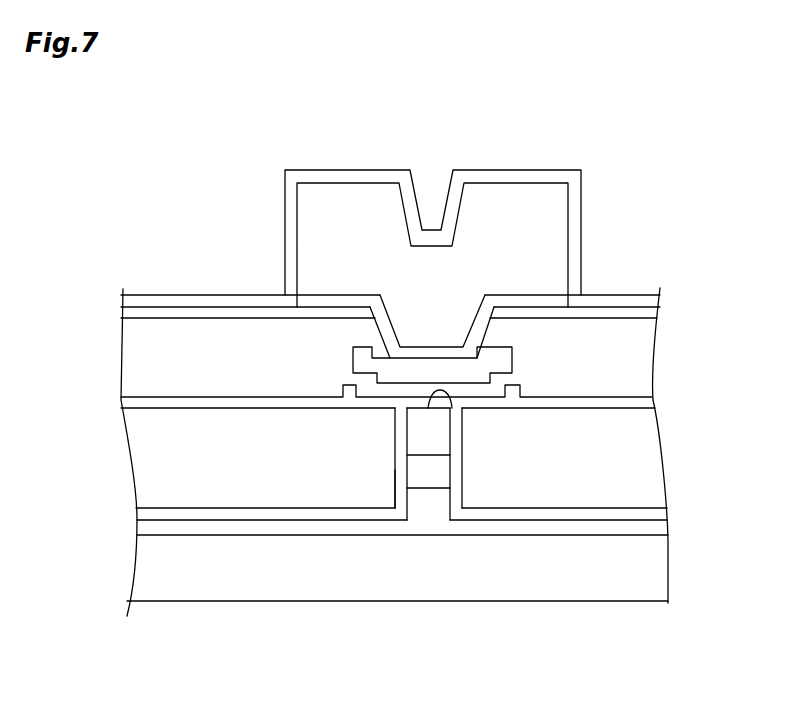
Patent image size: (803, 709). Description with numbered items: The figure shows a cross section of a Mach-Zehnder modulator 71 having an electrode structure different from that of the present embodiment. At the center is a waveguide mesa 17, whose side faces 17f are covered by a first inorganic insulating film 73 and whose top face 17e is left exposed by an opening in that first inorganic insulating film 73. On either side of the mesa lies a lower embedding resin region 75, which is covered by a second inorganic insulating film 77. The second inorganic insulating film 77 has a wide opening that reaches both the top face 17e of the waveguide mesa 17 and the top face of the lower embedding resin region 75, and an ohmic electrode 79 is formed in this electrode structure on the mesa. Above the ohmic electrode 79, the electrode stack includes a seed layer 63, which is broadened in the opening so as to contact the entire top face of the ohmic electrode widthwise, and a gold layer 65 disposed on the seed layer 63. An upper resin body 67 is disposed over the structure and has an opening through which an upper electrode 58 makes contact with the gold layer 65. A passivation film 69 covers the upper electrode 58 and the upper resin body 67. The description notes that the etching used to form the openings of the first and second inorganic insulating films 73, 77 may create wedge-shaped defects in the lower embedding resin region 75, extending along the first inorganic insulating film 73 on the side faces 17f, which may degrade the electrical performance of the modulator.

The waveguide mesa 17 is at (441, 389).
The top face of the waveguide mesa 17e is at (450, 520).
The side faces of the waveguide mesa 17f is at (394, 492).
The upper electrode 58 is at (322, 312).
The seed layer 63 is at (412, 383).
The gold layer 65 is at (358, 347).
The upper resin body 67 is at (207, 361).
The passivation film 69 is at (549, 172).
The Mach-Zehnder modulator 71 is at (680, 196).
The first inorganic insulating film 73 is at (395, 464).
The lower embedding resin region 75 is at (181, 447).
The second inorganic insulating film 77 is at (143, 399).
The ohmic electrode 79 is at (456, 406).